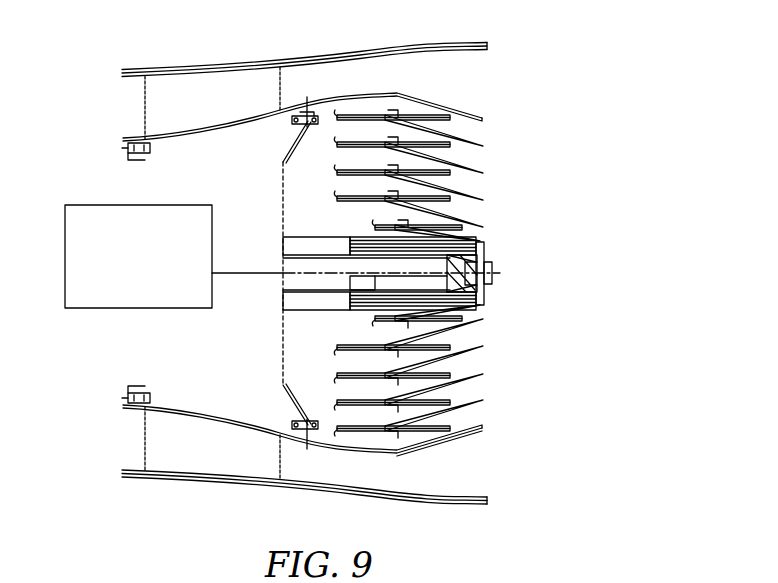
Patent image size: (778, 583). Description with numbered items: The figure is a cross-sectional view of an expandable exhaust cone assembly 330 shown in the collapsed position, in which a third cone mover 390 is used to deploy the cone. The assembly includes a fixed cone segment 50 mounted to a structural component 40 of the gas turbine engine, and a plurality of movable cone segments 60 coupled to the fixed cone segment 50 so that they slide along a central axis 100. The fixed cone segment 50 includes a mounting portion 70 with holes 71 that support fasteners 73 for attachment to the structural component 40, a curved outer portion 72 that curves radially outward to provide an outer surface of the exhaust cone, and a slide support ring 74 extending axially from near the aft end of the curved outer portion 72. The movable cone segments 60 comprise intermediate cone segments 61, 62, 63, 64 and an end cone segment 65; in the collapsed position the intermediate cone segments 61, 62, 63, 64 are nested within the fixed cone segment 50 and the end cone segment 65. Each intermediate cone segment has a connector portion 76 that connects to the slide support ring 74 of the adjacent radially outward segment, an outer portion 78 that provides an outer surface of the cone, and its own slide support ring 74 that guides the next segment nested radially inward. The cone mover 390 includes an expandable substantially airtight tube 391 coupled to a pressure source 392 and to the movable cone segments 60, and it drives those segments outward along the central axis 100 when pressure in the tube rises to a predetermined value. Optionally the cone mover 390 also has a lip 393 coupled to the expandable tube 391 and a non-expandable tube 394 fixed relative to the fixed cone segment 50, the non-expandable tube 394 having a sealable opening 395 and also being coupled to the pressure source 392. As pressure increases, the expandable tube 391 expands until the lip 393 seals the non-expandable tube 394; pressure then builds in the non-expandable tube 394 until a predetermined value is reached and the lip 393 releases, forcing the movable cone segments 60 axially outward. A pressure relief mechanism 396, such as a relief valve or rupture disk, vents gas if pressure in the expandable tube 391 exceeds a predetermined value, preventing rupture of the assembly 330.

The structural component 40 is at (157, 95).
The fixed cone segment 50 is at (468, 454).
The plurality of movable cone segments 60 is at (448, 230).
The intermediate cone segment 61 is at (478, 424).
The intermediate cone segment 62 is at (478, 397).
The intermediate cone segment 63 is at (478, 369).
The intermediate cone segment 64 is at (478, 342).
The end cone segment 65 is at (483, 321).
The mounting portion 70 is at (304, 70).
The holes 71 is at (314, 91).
The curved outer portion 72 is at (302, 270).
The fasteners 73 is at (392, 68).
The slide support ring 74 is at (376, 225).
The connector portion 76 is at (367, 226).
The outer portion 78 is at (403, 281).
The central axis 100 is at (358, 287).
The expandable exhaust cone assembly 330 is at (380, 89).
The cone mover 390 is at (268, 448).
The expandable substantially airtight tube 391 is at (403, 269).
The pressure source 392 is at (174, 271).
The lip 393 is at (360, 315).
The non-expandable tube 394 is at (348, 242).
The sealable opening 395 is at (480, 253).
The pressure relief mechanism 396 is at (534, 265).